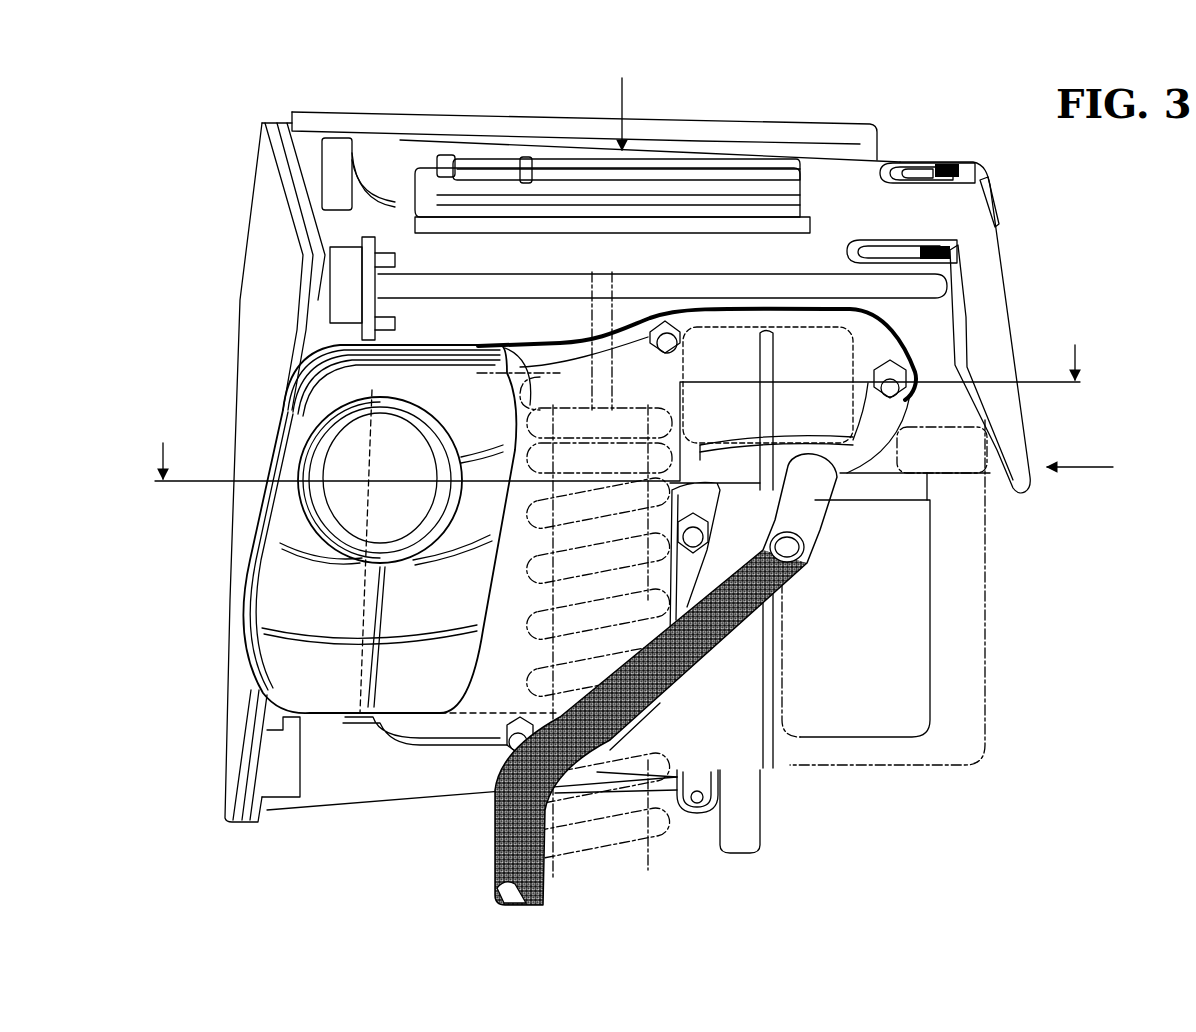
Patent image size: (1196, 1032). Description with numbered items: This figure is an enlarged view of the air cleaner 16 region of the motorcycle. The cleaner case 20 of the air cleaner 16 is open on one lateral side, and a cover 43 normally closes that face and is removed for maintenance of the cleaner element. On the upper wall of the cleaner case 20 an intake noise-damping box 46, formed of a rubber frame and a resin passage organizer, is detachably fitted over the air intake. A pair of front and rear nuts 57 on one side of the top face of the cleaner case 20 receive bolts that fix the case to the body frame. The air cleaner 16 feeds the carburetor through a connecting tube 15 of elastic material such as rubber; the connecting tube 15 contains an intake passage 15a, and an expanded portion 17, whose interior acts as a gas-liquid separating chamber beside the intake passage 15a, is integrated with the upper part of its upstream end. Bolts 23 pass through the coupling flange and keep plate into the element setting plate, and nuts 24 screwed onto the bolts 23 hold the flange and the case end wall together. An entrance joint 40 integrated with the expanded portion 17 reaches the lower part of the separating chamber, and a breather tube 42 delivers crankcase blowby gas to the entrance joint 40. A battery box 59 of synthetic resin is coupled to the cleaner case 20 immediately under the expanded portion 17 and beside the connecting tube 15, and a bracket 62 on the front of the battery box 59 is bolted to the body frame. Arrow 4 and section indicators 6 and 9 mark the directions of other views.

The view direction arrow 4 is at (1092, 468).
The rear fork 6 is at (619, 413).
The rear cushion 9 is at (697, 862).
The connecting tube 15 is at (283, 583).
The intake passage 15a is at (322, 500).
The air cleaner 16 is at (866, 160).
The expanded portion 17 is at (853, 363).
The cleaner case 20 is at (848, 180).
The bolts 23 is at (665, 352).
The nuts 24 is at (667, 345).
The entrance joint 40 is at (808, 508).
The breather tube 42 is at (687, 680).
The cover 43 is at (255, 377).
The intake noise-damping box 46 is at (683, 175).
The nuts 57 is at (938, 170).
The battery box 59 is at (985, 683).
The bracket 62 is at (336, 148).